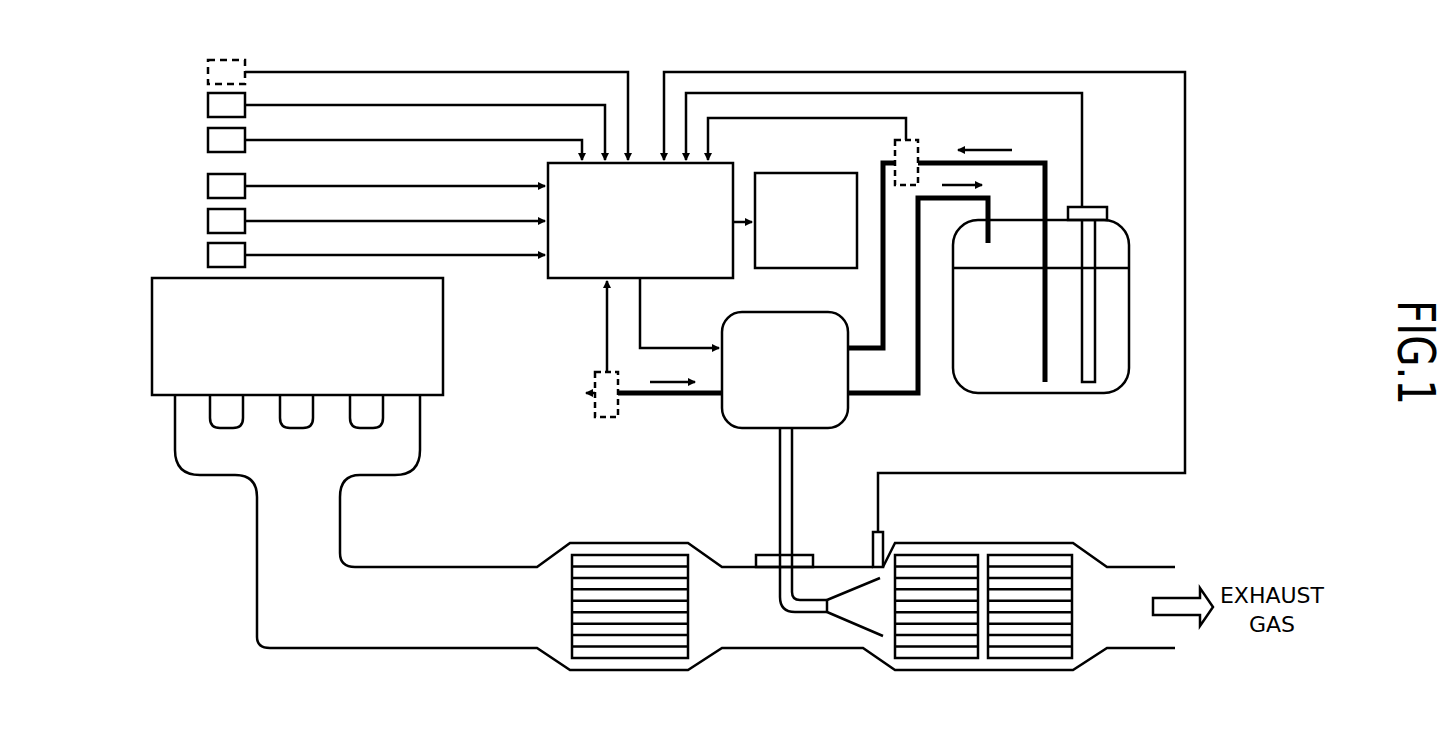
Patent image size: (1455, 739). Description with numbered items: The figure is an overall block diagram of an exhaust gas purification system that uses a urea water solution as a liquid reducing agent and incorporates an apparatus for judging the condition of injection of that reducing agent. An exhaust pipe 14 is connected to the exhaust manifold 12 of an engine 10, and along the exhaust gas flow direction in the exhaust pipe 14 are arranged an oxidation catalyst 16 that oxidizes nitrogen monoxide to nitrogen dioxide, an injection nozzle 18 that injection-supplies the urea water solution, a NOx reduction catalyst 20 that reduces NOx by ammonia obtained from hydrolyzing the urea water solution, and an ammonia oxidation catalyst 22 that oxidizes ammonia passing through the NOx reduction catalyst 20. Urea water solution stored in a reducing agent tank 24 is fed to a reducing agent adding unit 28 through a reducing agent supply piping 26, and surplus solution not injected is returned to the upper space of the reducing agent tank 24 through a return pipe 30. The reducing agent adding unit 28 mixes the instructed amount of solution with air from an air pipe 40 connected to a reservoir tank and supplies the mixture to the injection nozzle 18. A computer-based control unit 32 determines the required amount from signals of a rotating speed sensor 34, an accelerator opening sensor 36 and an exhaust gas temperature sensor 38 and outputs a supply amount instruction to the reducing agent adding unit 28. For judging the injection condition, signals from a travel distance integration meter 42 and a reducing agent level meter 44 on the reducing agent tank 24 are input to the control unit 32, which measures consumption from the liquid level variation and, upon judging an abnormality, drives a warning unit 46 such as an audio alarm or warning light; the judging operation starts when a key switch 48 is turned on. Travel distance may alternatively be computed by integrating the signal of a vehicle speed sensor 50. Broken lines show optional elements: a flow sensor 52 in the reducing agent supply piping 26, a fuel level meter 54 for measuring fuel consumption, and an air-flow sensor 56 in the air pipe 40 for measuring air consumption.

The engine 10 is at (153, 330).
The exhaust manifold 12 is at (187, 452).
The exhaust pipe 14 is at (265, 613).
The oxidation catalyst 16 is at (602, 652).
The injection nozzle 18 is at (790, 603).
The NOx reduction catalyst 20 is at (925, 652).
The ammonia oxidation catalyst 22 is at (1030, 652).
The reducing agent tank 24 is at (1100, 395).
The reducing agent supply piping 26 is at (1012, 163).
The reducing agent adding unit 28 is at (748, 427).
The return pipe 30 is at (893, 395).
The control unit 32 is at (567, 281).
The rotating speed sensor 34 is at (208, 255).
The accelerator opening sensor 36 is at (208, 221).
The exhaust gas temperature sensor 38 is at (872, 542).
The air pipe 40 is at (688, 395).
The travel distance integration meter 42 is at (208, 105).
The reducing agent level meter 44 is at (1097, 252).
The warning unit 46 is at (840, 173).
The key switch 48 is at (208, 140).
The vehicle speed sensor 50 is at (208, 186).
The flow sensor 52 is at (920, 160).
The fuel level meter 54 is at (208, 72).
The air-flow sensor 56 is at (597, 410).